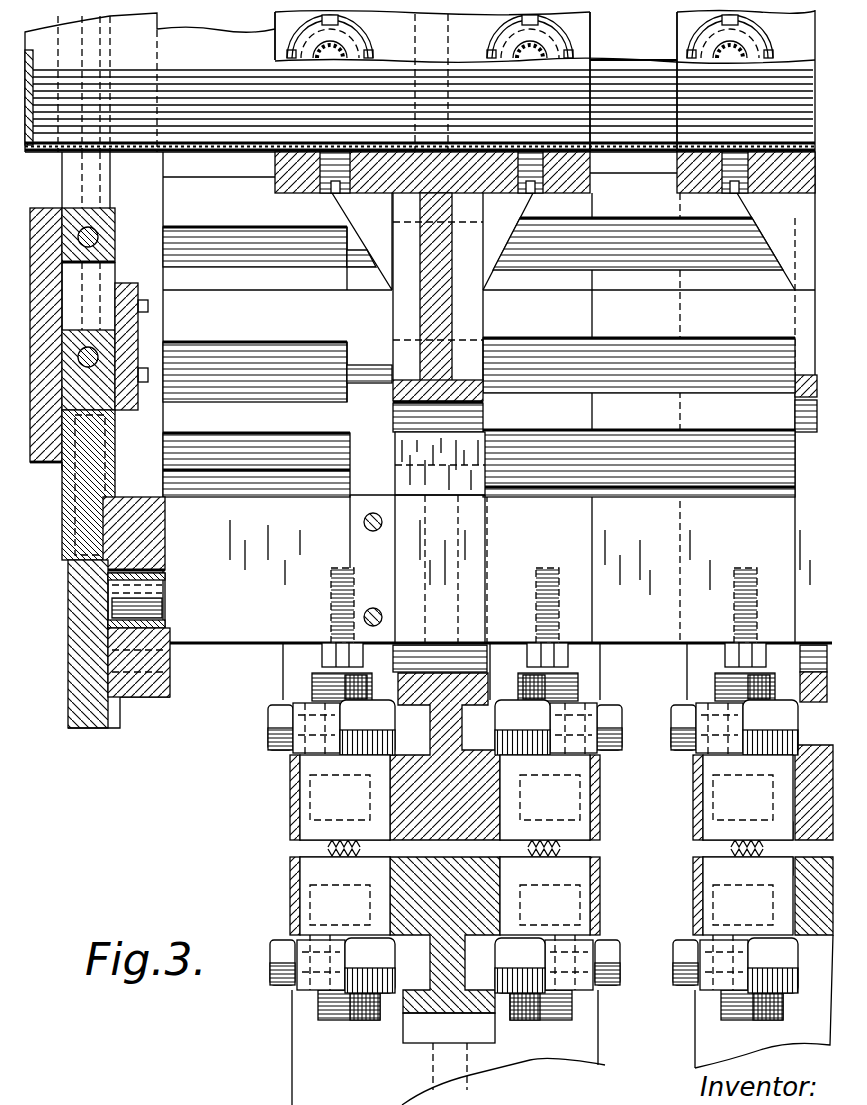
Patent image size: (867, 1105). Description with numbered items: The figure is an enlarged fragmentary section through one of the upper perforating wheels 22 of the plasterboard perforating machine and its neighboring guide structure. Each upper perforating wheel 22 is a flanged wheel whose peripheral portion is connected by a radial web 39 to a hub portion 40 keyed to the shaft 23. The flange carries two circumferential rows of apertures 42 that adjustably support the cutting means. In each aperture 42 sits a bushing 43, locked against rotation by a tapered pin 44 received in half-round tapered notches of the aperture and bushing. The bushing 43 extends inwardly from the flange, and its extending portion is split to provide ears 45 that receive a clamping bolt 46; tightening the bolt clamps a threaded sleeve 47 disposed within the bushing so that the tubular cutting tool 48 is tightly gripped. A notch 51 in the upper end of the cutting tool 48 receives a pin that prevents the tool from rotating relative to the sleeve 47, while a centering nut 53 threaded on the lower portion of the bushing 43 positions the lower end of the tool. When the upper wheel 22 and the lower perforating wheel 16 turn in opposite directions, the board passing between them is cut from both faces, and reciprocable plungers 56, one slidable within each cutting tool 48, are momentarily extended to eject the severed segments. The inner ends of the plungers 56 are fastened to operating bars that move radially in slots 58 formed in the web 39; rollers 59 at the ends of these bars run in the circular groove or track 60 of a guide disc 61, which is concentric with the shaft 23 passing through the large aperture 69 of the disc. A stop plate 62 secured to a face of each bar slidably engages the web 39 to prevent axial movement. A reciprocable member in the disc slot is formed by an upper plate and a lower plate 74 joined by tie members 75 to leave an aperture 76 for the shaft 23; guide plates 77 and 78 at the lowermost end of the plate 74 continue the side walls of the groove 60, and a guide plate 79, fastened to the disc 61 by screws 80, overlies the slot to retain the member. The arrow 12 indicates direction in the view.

The direction arrow 12 is at (340, 552).
The lower perforating wheel 16 is at (320, 1075).
The upper perforating wheel 22 is at (287, 291).
The shaft 23 is at (214, 108).
The radial web 39 is at (453, 345).
The hub portion 40 is at (331, 194).
The apertures 42 is at (298, 755).
The bushing 43 is at (300, 768).
The tapered pin 44 is at (300, 787).
The ears 45 is at (284, 712).
The clamping bolt 46 is at (270, 722).
The threaded sleeve 47 is at (318, 685).
The tubular cutting tool 48 is at (700, 48).
The notch 51 is at (255, 225).
The centering nut 53 is at (700, 30).
The reciprocable plunger 56 is at (323, 659).
The radially extending slots 58 is at (496, 446).
The rollers 59 is at (167, 648).
The circular groove or track 60 is at (68, 622).
The guide disc 61 is at (33, 463).
The stop plate 62 is at (388, 505).
The large aperture 69 is at (42, 220).
The lower plate 74 is at (115, 448).
The tie members 75 is at (111, 187).
The aperture 76 is at (112, 208).
The guide plate 77 is at (164, 483).
The guide plate 78 is at (159, 698).
The guide plate 79 is at (150, 378).
The screws 80 is at (149, 318).